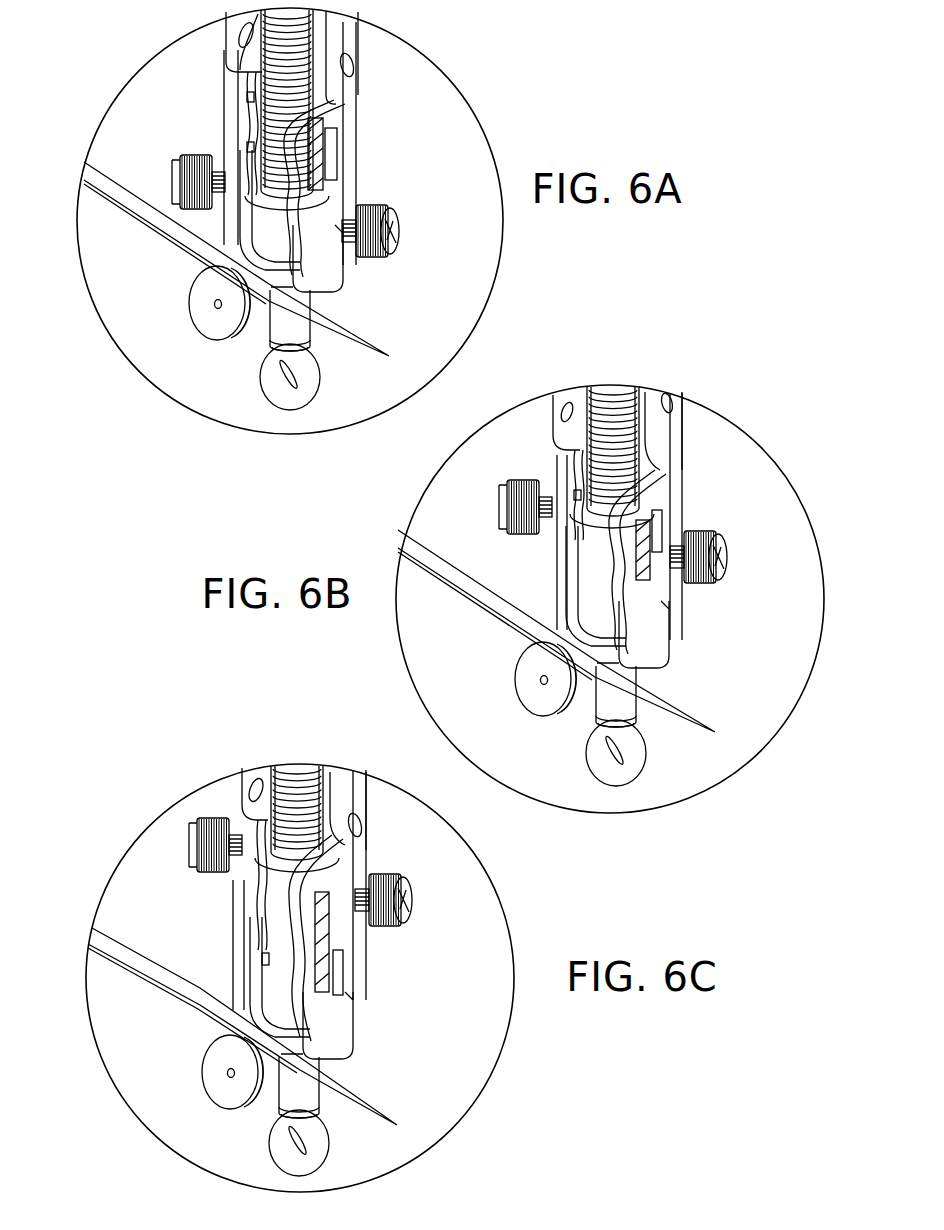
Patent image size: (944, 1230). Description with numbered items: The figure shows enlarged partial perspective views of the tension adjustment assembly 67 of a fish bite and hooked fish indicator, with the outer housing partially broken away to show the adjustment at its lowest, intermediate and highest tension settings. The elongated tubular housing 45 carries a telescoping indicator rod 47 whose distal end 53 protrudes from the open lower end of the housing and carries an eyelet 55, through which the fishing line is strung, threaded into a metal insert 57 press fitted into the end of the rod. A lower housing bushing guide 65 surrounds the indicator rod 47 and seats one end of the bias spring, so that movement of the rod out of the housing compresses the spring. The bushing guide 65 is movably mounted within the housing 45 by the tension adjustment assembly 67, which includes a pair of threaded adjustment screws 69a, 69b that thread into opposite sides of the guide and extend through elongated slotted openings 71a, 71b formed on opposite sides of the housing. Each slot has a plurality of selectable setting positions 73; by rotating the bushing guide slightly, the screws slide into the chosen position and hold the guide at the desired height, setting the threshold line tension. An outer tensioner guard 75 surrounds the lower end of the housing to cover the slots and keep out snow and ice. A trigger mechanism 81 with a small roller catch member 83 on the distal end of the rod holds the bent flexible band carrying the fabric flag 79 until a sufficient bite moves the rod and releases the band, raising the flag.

In FIG. 6A, the tubular housing 45 is at (308, 280).
In FIG. 6B, the tubular housing 45 is at (642, 632).
In FIG. 6C, the tubular housing 45 is at (330, 1022).
In FIG. 6A, the indicator rod 47 is at (310, 302).
In FIG. 6B, the indicator rod 47 is at (637, 677).
In FIG. 6C, the indicator rod 47 is at (315, 1067).
In FIG. 6A, the distal end 53 is at (282, 337).
In FIG. 6B, the distal end 53 is at (608, 707).
In FIG. 6C, the distal end 53 is at (285, 1103).
In FIG. 6A, the eyelet 55 is at (273, 383).
In FIG. 6B, the eyelet 55 is at (608, 770).
In FIG. 6C, the eyelet 55 is at (290, 1162).
In FIG. 6A, the metal insert 57 is at (308, 345).
In FIG. 6B, the metal insert 57 is at (637, 715).
In FIG. 6C, the metal insert 57 is at (330, 1131).
In FIG. 6A, the lower housing bushing guide 65 is at (263, 250).
In FIG. 6B, the lower housing bushing guide 65 is at (592, 560).
In FIG. 6C, the lower housing bushing guide 65 is at (267, 903).
In FIG. 6A, the tension adjustment assembly 67 is at (338, 143).
In FIG. 6B, the tension adjustment assembly 67 is at (630, 520).
In FIG. 6C, the tension adjustment assembly 67 is at (320, 903).
In FIG. 6A, the threaded adjustment screw 69a is at (402, 237).
In FIG. 6B, the threaded adjustment screw 69a is at (730, 580).
In FIG. 6C, the threaded adjustment screw 69a is at (397, 875).
In FIG. 6A, the threaded adjustment screw 69b is at (183, 163).
In FIG. 6B, the threaded adjustment screw 69b is at (503, 487).
In FIG. 6C, the threaded adjustment screw 69b is at (190, 827).
In FIG. 6A, the slotted opening 71a is at (313, 220).
In FIG. 6B, the slotted opening 71a is at (657, 617).
In FIG. 6C, the slotted opening 71a is at (323, 960).
In FIG. 6A, the slotted opening 71b is at (260, 83).
In FIG. 6C, the slotted opening 71b is at (270, 940).
In FIG. 6A, the selectable setting positions 73 is at (252, 147).
In FIG. 6B, the selectable setting positions 73 is at (667, 523).
In FIG. 6C, the selectable setting positions 73 is at (277, 960).
In FIG. 6A, the outer tensioner guard 75 is at (352, 24).
In FIG. 6B, the outer tensioner guard 75 is at (680, 523).
In FIG. 6C, the outer tensioner guard 75 is at (357, 835).
In FIG. 6A, the fabric flag 79 is at (113, 193).
In FIG. 6B, the fabric flag 79 is at (480, 593).
In FIG. 6C, the fabric flag 79 is at (128, 968).
In FIG. 6A, the trigger mechanism 81 is at (235, 366).
In FIG. 6B, the trigger mechanism 81 is at (579, 742).
In FIG. 6C, the trigger mechanism 81 is at (258, 1121).
In FIG. 6A, the catch member 83 is at (200, 298).
In FIG. 6B, the catch member 83 is at (533, 663).
In FIG. 6C, the catch member 83 is at (213, 1055).